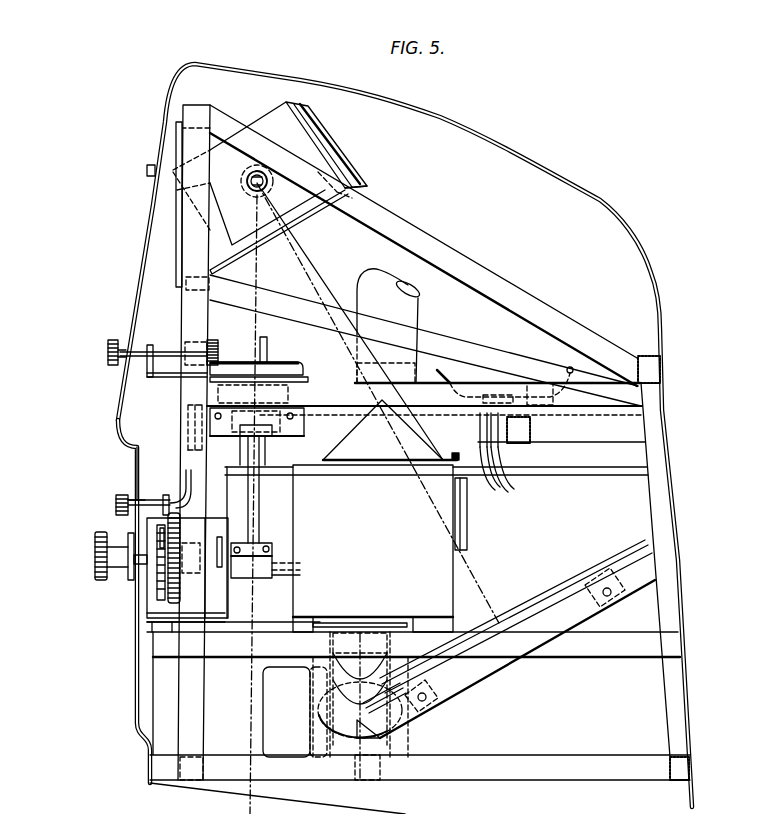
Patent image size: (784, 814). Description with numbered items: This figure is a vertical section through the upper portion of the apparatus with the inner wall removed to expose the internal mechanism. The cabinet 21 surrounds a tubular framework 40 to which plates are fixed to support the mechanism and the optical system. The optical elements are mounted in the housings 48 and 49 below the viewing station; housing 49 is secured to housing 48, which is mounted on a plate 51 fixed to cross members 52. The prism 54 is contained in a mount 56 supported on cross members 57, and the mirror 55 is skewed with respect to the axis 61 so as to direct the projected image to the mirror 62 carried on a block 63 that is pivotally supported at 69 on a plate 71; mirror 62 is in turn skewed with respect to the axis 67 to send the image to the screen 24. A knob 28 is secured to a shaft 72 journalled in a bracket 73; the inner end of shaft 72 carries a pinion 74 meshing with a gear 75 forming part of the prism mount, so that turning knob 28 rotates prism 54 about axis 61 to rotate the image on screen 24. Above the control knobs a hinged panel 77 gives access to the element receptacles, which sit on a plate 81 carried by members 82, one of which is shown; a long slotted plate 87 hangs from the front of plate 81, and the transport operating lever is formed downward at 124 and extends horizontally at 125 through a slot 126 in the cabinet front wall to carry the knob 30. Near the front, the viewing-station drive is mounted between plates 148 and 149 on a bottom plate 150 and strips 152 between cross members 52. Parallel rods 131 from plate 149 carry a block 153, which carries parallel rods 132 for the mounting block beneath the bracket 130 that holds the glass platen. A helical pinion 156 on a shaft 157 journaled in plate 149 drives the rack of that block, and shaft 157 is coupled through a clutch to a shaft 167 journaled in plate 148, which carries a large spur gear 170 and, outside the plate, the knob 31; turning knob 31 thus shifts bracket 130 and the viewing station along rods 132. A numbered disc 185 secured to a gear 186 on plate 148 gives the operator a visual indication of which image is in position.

The cabinet 21 is at (638, 253).
The screen 24 is at (562, 586).
The knob 28 is at (116, 340).
The knob 30 is at (116, 496).
The knob 31 is at (96, 566).
The tubular framework 40 is at (473, 272).
The housing 48 is at (460, 573).
The housing 49 is at (280, 498).
The plate 51 is at (450, 619).
The cross members 52 is at (574, 658).
The prism 54 is at (266, 362).
The mirror 55 is at (322, 152).
The mount 56 is at (265, 418).
The cross members 57 is at (338, 393).
The axis 61 is at (260, 275).
The mirror 62 is at (362, 185).
The block 63 is at (263, 122).
The axis 67 is at (318, 286).
The pivotal support 69 is at (300, 215).
The plate 71 is at (218, 192).
The shaft 72 is at (158, 345).
The bracket 73 is at (158, 378).
The pinion 74 is at (209, 344).
The gear 75 is at (280, 363).
The hinged panel 77 is at (136, 275).
The plate 81 is at (432, 417).
The members 82 is at (532, 432).
The long plate 87 is at (188, 438).
The vertical portion of lever 124 is at (188, 451).
The horizontal extension of lever 125 is at (128, 505).
The slot 126 is at (124, 484).
The bracket 130 is at (265, 490).
The parallel rods 131 is at (274, 566).
The parallel rods 132 is at (270, 548).
The plate 148 is at (150, 612).
The plate 149 is at (226, 592).
The bottom plate 150 is at (226, 618).
The strips 152 is at (152, 636).
The block 153 is at (274, 557).
The helical pinion 156 is at (274, 574).
The shaft 157 is at (253, 540).
The shaft 167 is at (137, 579).
The large spur gear 170 is at (182, 486).
The disc 185 is at (158, 590).
The gear 186 is at (158, 532).